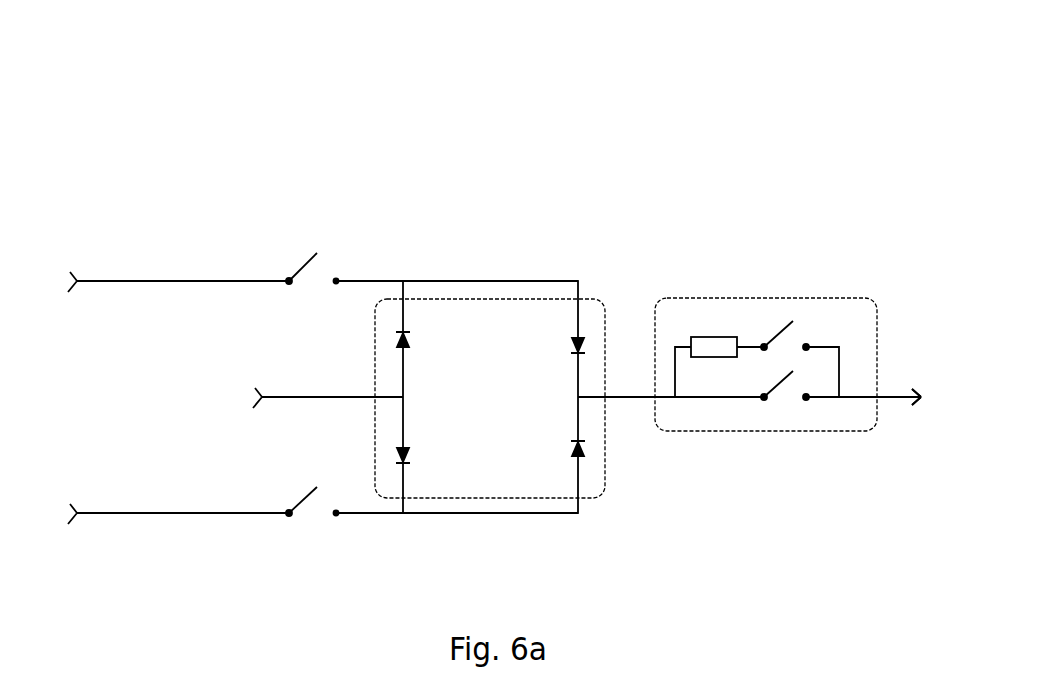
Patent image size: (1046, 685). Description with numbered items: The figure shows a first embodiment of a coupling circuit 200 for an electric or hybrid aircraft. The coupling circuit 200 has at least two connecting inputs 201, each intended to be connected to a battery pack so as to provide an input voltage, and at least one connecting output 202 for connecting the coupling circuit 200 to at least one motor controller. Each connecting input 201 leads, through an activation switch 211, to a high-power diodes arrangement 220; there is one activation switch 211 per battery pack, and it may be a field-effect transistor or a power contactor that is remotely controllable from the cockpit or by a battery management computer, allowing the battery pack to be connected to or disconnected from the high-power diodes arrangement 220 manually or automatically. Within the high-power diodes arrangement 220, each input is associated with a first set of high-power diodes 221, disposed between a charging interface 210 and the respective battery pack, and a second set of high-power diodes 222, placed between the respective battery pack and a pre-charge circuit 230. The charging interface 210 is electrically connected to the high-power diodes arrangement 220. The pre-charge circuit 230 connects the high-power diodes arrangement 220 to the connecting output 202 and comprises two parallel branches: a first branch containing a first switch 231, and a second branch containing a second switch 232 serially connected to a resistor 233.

The coupling circuit 200 is at (279, 89).
The connecting input 201 is at (70, 272).
The connecting output 202 is at (915, 400).
The charging interface 210 is at (260, 388).
The activation switch 211 is at (305, 258).
The high-power diodes arrangement 220 is at (532, 404).
The first set of high-power diodes 221 is at (415, 457).
The second set of high-power diodes 222 is at (563, 442).
The pre-charge circuit 230 is at (776, 323).
The first switch 231 is at (778, 387).
The second switch 232 is at (783, 327).
The resistor 233 is at (713, 338).